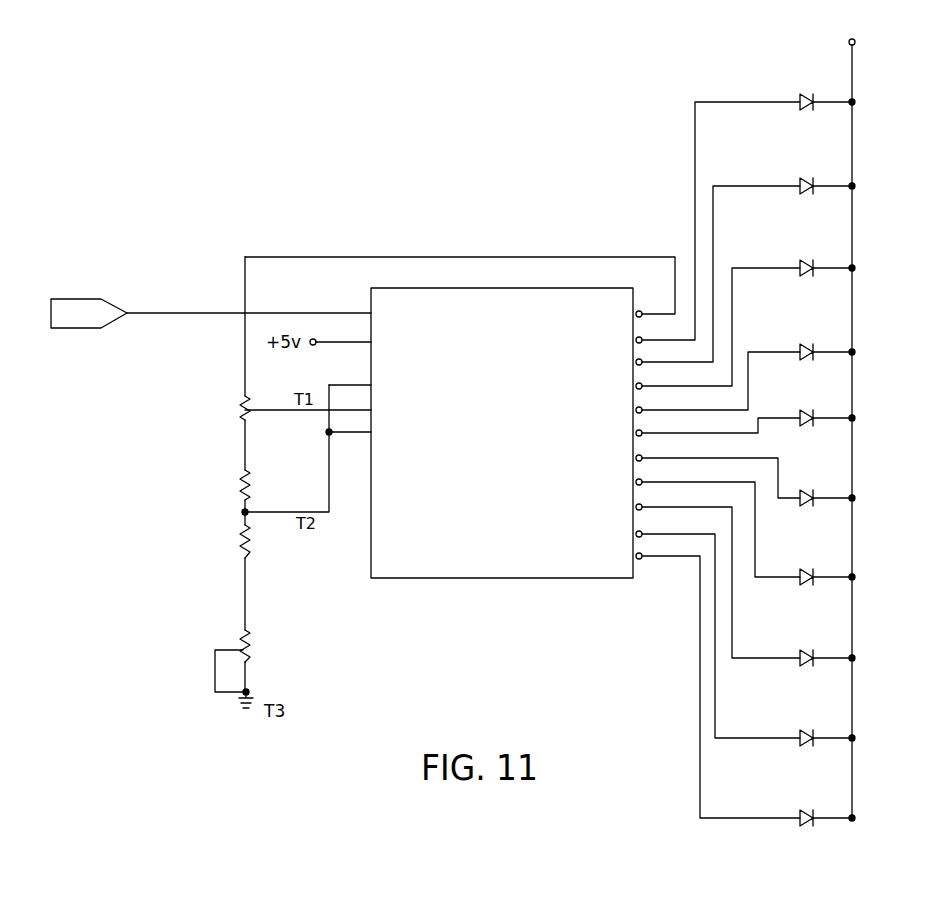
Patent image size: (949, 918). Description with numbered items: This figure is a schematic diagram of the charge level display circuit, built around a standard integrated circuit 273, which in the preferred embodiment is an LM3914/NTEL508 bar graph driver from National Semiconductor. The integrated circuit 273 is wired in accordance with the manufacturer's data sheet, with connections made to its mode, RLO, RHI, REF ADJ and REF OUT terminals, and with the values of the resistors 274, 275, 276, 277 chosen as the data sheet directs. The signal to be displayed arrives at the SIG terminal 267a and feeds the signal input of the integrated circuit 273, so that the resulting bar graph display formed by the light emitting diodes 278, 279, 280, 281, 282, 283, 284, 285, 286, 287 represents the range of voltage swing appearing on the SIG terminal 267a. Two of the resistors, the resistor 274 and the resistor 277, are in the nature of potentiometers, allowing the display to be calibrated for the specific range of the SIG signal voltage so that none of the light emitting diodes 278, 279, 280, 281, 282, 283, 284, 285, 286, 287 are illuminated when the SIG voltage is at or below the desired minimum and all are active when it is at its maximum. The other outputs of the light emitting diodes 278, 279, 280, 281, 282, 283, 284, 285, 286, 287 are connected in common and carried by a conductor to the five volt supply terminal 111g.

The SIG terminal 267a is at (104, 304).
The integrated circuit 273 is at (498, 302).
The resistor 274 is at (244, 412).
The resistor 275 is at (245, 488).
The resistor 276 is at (245, 543).
The resistor 277 is at (243, 643).
The light emitting diode 278 is at (815, 107).
The light emitting diode 279 is at (815, 192).
The light emitting diode 280 is at (815, 274).
The light emitting diode 281 is at (815, 357).
The light emitting diode 282 is at (820, 425).
The light emitting diode 283 is at (820, 507).
The light emitting diode 284 is at (820, 585).
The light emitting diode 285 is at (820, 665).
The light emitting diode 286 is at (820, 745).
The light emitting diode 287 is at (820, 812).
The 5 volt supply terminal 111g is at (856, 43).